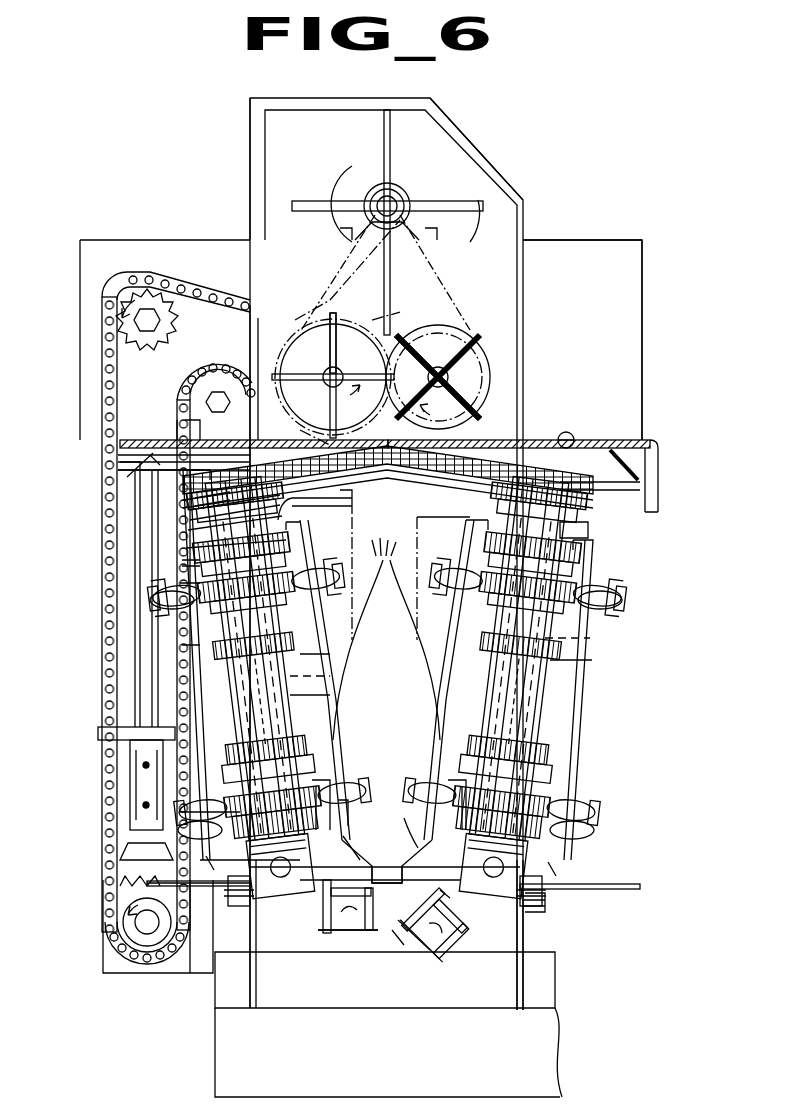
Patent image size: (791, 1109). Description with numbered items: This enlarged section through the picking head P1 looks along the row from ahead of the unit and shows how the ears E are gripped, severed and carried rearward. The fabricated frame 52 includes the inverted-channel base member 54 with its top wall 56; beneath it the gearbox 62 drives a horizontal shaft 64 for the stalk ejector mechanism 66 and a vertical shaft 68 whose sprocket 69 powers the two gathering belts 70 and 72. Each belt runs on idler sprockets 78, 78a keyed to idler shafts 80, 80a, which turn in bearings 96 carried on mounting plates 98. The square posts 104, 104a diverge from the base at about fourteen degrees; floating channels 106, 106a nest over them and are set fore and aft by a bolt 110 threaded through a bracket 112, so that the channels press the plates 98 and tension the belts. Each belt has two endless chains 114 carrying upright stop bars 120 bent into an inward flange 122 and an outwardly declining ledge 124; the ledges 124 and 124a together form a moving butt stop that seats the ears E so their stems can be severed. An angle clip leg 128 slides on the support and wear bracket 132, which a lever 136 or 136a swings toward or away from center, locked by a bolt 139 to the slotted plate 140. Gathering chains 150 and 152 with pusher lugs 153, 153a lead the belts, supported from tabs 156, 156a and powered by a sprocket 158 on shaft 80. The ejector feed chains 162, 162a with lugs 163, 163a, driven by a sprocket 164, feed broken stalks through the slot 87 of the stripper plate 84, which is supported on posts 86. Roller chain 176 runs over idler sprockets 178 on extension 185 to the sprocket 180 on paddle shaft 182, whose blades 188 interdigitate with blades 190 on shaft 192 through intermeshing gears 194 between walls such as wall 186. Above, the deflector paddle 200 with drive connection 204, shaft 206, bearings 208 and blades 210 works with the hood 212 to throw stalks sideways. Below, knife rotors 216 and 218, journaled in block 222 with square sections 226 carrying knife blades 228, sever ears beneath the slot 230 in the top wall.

The fabricated frame 52 is at (550, 970).
The elongate base member 54 is at (546, 908).
The top wall 56 is at (462, 862).
The gearbox 62 is at (103, 965).
The horizontal shaft 64 is at (134, 924).
The stalk ejector mechanism 66 is at (508, 310).
The vertically extending shaft 68 is at (152, 628).
The sprocket 69 is at (118, 462).
The gathering belt 70 is at (182, 566).
The gathering belt 72 is at (595, 553).
The idler sprockets 78 is at (200, 600).
The idler sprockets 78a is at (566, 598).
The idler shaft 80 is at (298, 640).
The idler shaft 80a is at (530, 680).
The stripper plate 84 is at (490, 440).
The posts 86 is at (345, 616).
The central slot 87 is at (388, 477).
The bearings 96 is at (290, 526).
The mounting plate 98 is at (303, 554).
The square post 104 is at (290, 676).
The square post 104a is at (594, 637).
The floating channel 106 is at (290, 695).
The floating channel 106a is at (597, 659).
The bolt 110 is at (256, 880).
The bracket 112 is at (263, 910).
The endless chains 114 is at (196, 583).
The stop bar 120 is at (190, 645).
The inwardly directed flange 122 is at (190, 550).
The ledge 124 is at (348, 842).
The ledge 124a is at (408, 822).
The inwardly directed leg 128 is at (318, 782).
The gathering belt support and chain wear bracket 132 is at (344, 800).
The pivotable lever 136 is at (110, 890).
The lever 136a is at (620, 884).
The bolt 139 is at (277, 873).
The slotted locking plate 140 is at (236, 894).
The gathering chain 150 is at (195, 518).
The gathering chain 152 is at (588, 530).
The pusher lugs 153 is at (336, 503).
The pusher lugs 153a is at (443, 531).
The tabs 156 is at (186, 420).
The tabs 156a is at (568, 436).
The sprocket 158 is at (195, 534).
The ejector feed chain 162 is at (200, 500).
The ejector feed chain 162a is at (604, 494).
The laterally projecting lugs 163 is at (200, 484).
The laterally projecting lugs 163a is at (614, 468).
The sprocket 164 is at (290, 446).
The roller chain 176 is at (206, 292).
The idler sprockets 178 is at (200, 386).
The sprocket 180 is at (290, 352).
The paddle shaft 182 is at (333, 375).
The extension 185 is at (88, 260).
The upright wall 186 is at (524, 238).
The paddle blades 188 is at (336, 318).
The paddle blades 190 is at (470, 332).
The paddle shaft 192 is at (452, 377).
The intermeshing gears 194 is at (300, 335).
The deflector paddle 200 is at (406, 130).
The chain and sprocket drive connection 204 is at (438, 270).
The shaft 206 is at (400, 204).
The bearings 208 is at (398, 190).
The paddle blades 210 is at (364, 172).
The sheet metal hood 212 is at (468, 140).
The knife blade rotor 216 is at (332, 944).
The knife blade rotor 218 is at (444, 932).
The journal block 222 is at (524, 928).
The square sections 226 is at (398, 948).
The knife blade 228 is at (318, 930).
The slot 230 is at (386, 868).
The ears E is at (390, 736).
The picking head P1 is at (692, 192).